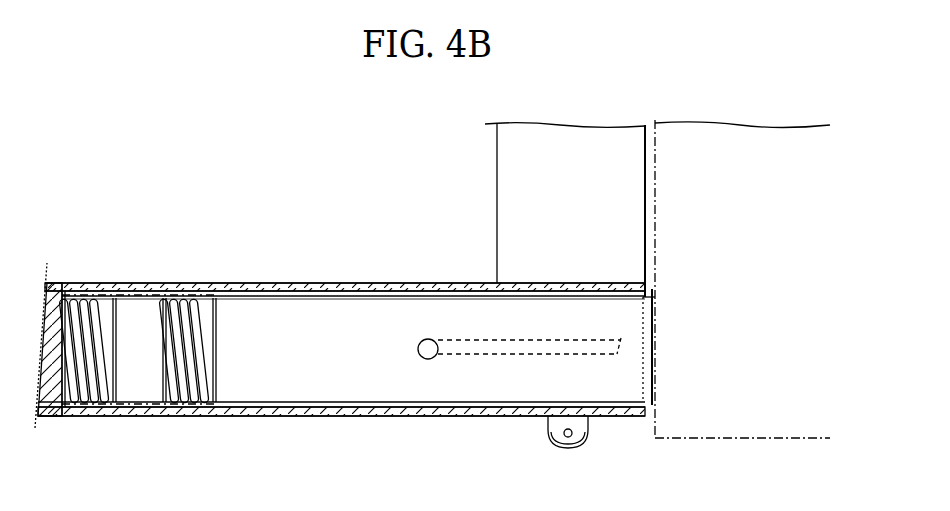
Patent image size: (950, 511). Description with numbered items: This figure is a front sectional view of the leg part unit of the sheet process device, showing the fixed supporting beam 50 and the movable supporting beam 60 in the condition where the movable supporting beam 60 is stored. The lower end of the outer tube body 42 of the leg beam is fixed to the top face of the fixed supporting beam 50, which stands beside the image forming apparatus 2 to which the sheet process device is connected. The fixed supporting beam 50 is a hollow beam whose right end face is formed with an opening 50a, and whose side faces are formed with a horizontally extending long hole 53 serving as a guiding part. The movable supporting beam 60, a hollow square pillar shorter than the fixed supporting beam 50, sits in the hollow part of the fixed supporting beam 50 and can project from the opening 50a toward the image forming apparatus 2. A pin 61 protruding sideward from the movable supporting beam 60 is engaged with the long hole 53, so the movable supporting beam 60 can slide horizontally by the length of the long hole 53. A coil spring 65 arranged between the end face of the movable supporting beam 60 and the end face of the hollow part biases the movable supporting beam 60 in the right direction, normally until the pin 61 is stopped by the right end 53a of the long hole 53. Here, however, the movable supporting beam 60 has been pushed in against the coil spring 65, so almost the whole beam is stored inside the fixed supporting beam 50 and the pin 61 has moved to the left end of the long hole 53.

The image forming apparatus 2 is at (657, 180).
The outer tube body 42 is at (522, 223).
The fixed supporting beam 50 is at (237, 283).
The opening 50a is at (653, 292).
The long hole 53 is at (535, 355).
The right end of the long hole 53a is at (620, 350).
The movable supporting beam 60 is at (634, 329).
The pin 61 is at (432, 360).
The coil spring 65 is at (176, 384).